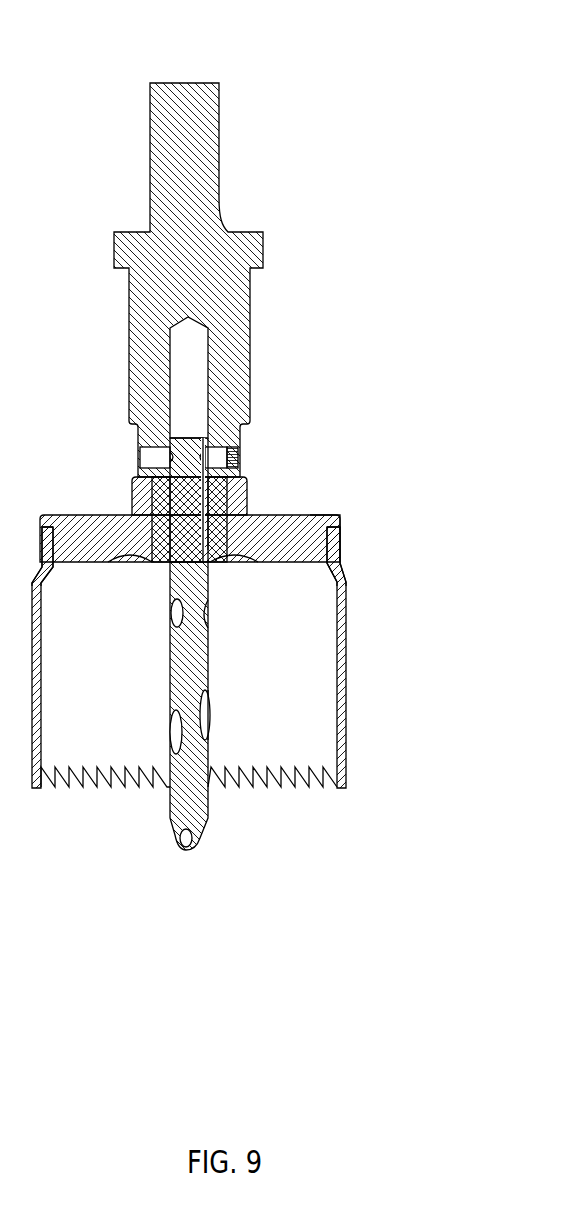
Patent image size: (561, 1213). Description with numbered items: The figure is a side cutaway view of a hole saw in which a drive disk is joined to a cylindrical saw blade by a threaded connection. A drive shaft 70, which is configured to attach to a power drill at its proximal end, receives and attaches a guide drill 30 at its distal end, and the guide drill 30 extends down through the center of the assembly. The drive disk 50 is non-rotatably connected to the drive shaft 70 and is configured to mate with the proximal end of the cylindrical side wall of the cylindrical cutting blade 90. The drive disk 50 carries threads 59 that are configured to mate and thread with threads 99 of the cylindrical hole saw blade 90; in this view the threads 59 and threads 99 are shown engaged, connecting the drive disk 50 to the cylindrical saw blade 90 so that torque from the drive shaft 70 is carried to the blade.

The drive shaft 70 is at (188, 110).
The drive disk 50 is at (285, 535).
The threads 59 is at (318, 515).
The threads 99 is at (338, 535).
The cylindrical cutting blade 90 is at (308, 736).
The guide drill 30 is at (210, 825).